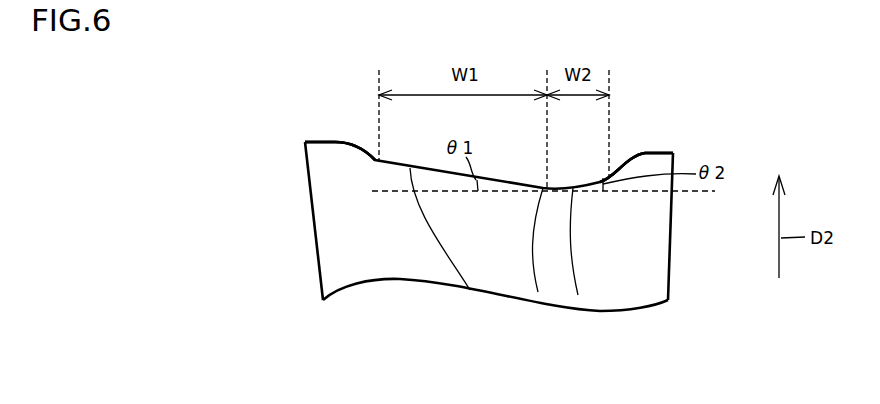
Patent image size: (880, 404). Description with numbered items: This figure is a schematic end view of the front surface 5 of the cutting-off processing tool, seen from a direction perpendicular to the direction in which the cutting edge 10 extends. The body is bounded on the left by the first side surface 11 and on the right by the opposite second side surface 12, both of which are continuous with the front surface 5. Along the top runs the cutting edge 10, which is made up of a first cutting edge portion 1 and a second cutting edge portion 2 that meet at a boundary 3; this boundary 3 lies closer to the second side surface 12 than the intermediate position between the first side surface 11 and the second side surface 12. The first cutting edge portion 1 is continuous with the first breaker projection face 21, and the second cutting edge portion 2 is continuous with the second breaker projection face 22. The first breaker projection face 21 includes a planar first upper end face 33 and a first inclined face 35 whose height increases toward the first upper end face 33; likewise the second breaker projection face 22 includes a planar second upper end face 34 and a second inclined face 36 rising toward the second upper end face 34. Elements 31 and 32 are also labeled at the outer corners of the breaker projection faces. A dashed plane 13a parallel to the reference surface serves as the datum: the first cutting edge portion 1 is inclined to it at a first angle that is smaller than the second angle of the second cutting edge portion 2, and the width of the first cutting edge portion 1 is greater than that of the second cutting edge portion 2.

The first cutting edge portion 1 is at (470, 290).
The second cutting edge portion 2 is at (578, 295).
The boundary 3 is at (538, 292).
The front surface 5 is at (345, 243).
The cutting edge 10 is at (475, 355).
The first side surface 11 is at (309, 185).
The second side surface 12 is at (671, 280).
The plane parallel to reference surface 13a is at (703, 193).
The first breaker projection face 21 is at (376, 86).
The second breaker projection face 22 is at (722, 86).
The first corner 31 is at (305, 141).
The second corner 32 is at (680, 153).
The first upper end face 33 is at (322, 140).
The second upper end face 34 is at (655, 153).
The first inclined face 35 is at (358, 150).
The second inclined face 36 is at (622, 165).